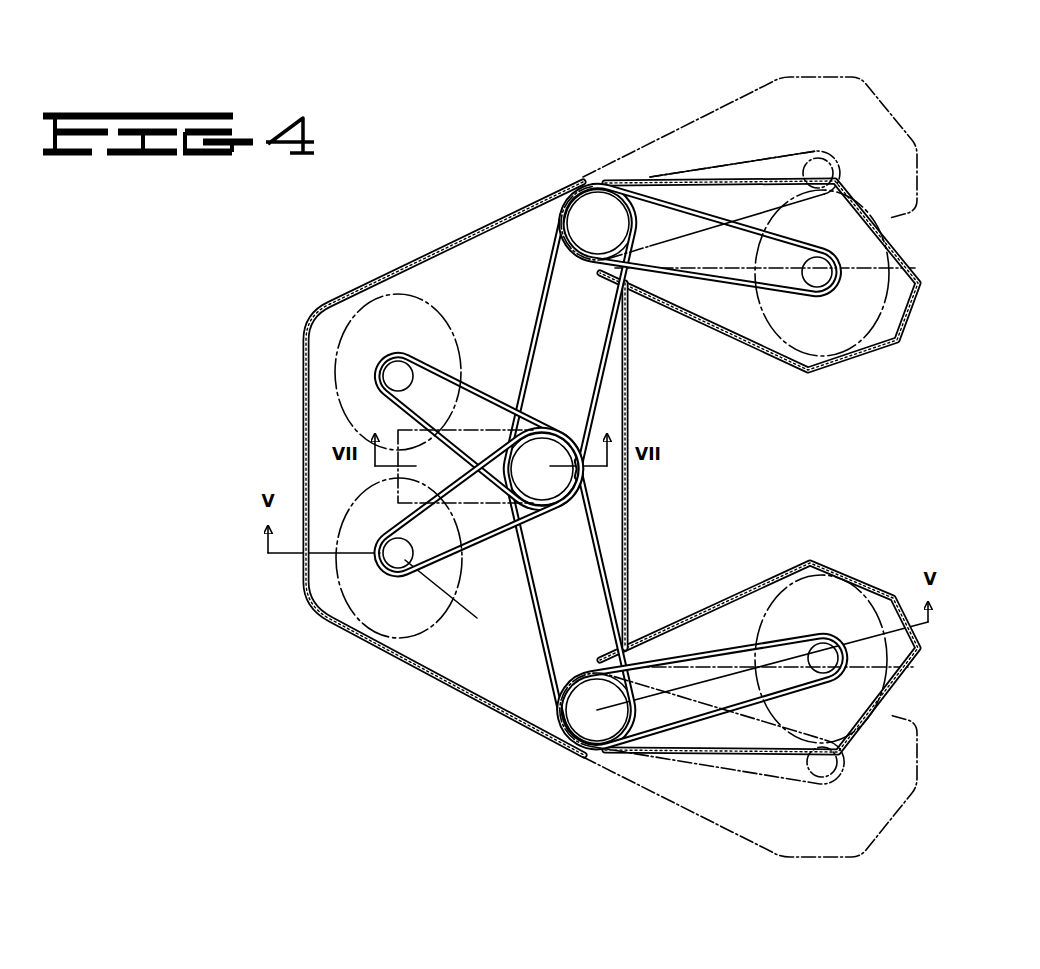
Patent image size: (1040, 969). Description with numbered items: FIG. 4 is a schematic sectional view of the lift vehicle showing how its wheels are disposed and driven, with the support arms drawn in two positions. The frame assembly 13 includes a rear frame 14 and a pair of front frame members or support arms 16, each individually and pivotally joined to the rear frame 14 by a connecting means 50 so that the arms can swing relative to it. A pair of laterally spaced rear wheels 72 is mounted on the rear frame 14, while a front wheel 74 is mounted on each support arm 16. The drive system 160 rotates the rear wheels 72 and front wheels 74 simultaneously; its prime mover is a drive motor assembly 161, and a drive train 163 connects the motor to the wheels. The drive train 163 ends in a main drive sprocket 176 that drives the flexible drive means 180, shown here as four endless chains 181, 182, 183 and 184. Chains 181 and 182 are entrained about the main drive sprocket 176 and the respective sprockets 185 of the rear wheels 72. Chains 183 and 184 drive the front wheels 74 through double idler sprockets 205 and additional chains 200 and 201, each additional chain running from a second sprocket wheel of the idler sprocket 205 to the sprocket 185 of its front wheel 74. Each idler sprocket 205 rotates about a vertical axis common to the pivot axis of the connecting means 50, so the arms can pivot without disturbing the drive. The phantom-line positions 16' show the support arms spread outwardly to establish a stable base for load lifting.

The frame assembly 13 is at (492, 726).
The rear frame 14 is at (437, 250).
The front frame members or support arms 16 is at (790, 466).
The phantom-line positions of support arms 16' is at (795, 467).
The connecting means 50 is at (589, 183).
The rear wheels 72 is at (386, 292).
The front wheels 74 is at (900, 272).
The drive system 160 is at (728, 402).
The drive motor assembly 161 is at (392, 480).
The drive train 163 is at (574, 425).
The main drive sprocket 176 is at (560, 478).
The flexible drive means 180 is at (624, 324).
The chain 181 is at (498, 537).
The chain 182 is at (485, 392).
The chain 183 is at (541, 310).
The chain 184 is at (540, 627).
The sprockets 185 is at (385, 373).
The additional chain 200 is at (742, 280).
The additional chain 201 is at (788, 640).
The double idler sprockets 205 is at (578, 203).